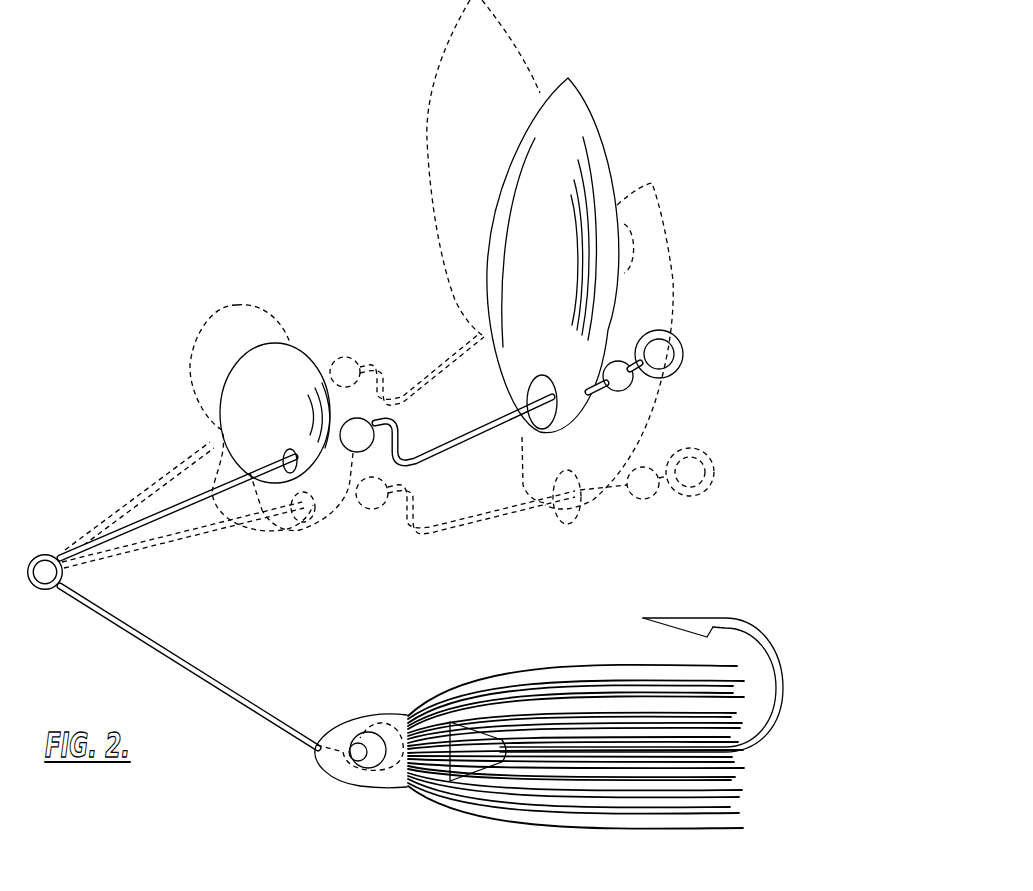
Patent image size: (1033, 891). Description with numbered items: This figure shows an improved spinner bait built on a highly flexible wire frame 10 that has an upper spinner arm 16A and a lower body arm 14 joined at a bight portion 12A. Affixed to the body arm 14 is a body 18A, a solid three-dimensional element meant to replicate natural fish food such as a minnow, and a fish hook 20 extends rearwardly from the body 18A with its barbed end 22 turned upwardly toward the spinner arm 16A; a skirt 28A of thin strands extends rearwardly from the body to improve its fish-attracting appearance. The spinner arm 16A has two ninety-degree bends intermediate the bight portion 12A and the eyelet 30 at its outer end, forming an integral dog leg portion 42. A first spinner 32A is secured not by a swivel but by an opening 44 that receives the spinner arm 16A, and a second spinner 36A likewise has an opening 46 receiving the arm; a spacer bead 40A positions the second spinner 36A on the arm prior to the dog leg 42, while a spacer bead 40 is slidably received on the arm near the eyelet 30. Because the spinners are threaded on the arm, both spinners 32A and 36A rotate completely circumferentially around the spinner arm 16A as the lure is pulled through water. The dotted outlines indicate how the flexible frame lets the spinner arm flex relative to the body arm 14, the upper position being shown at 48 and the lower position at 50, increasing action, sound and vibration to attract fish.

The wire frame 10 is at (135, 480).
The bight portion 12A is at (32, 593).
The body arm 14 is at (217, 677).
The spinner arm 16A is at (210, 490).
The body 18A is at (370, 723).
The fish hook 20 is at (780, 663).
The barbed end 22 is at (673, 620).
The skirt 28A is at (550, 687).
The eyelet 30 is at (677, 340).
The first spinner 32A is at (583, 128).
The second spinner 36A is at (281, 378).
The spacer bead 40 is at (627, 390).
The spacer bead 40A is at (357, 427).
The dog leg portion 42 is at (400, 443).
The opening 44 is at (535, 396).
The opening 46 is at (295, 465).
The upper position of spinner arm 48 is at (457, 345).
The lower position of spinner arm 50 is at (452, 530).